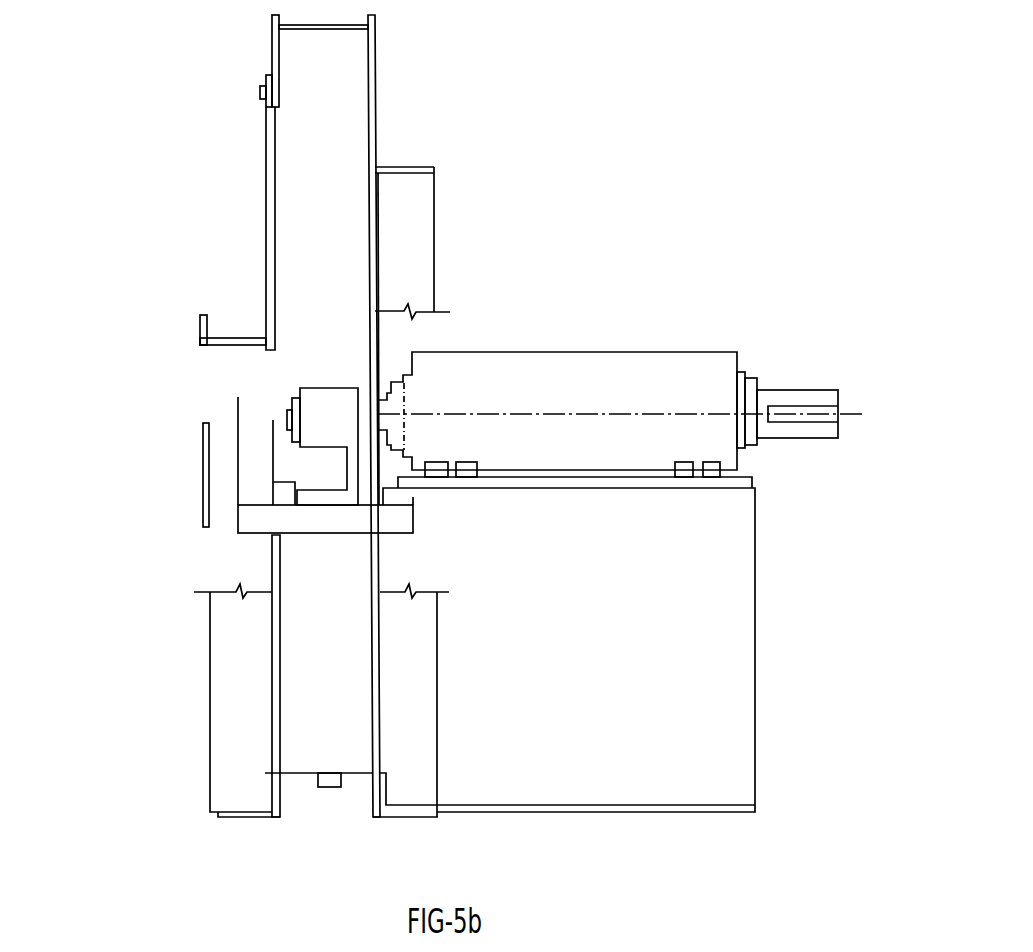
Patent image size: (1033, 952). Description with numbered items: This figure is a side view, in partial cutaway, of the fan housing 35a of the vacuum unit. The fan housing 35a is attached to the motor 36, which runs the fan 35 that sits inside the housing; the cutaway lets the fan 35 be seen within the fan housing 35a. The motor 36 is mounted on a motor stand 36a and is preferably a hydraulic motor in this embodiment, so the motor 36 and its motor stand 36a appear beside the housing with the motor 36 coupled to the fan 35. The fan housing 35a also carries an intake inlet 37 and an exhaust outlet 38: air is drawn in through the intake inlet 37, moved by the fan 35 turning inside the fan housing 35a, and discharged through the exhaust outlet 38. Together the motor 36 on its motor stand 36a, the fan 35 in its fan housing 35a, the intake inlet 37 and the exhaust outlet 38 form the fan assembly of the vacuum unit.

The fan 35 is at (312, 497).
The fan housing 35a is at (340, 148).
The motor 36 is at (703, 383).
The motor stand 36a is at (715, 630).
The intake inlet 37 is at (203, 475).
The exhaust outlet 38 is at (270, 522).